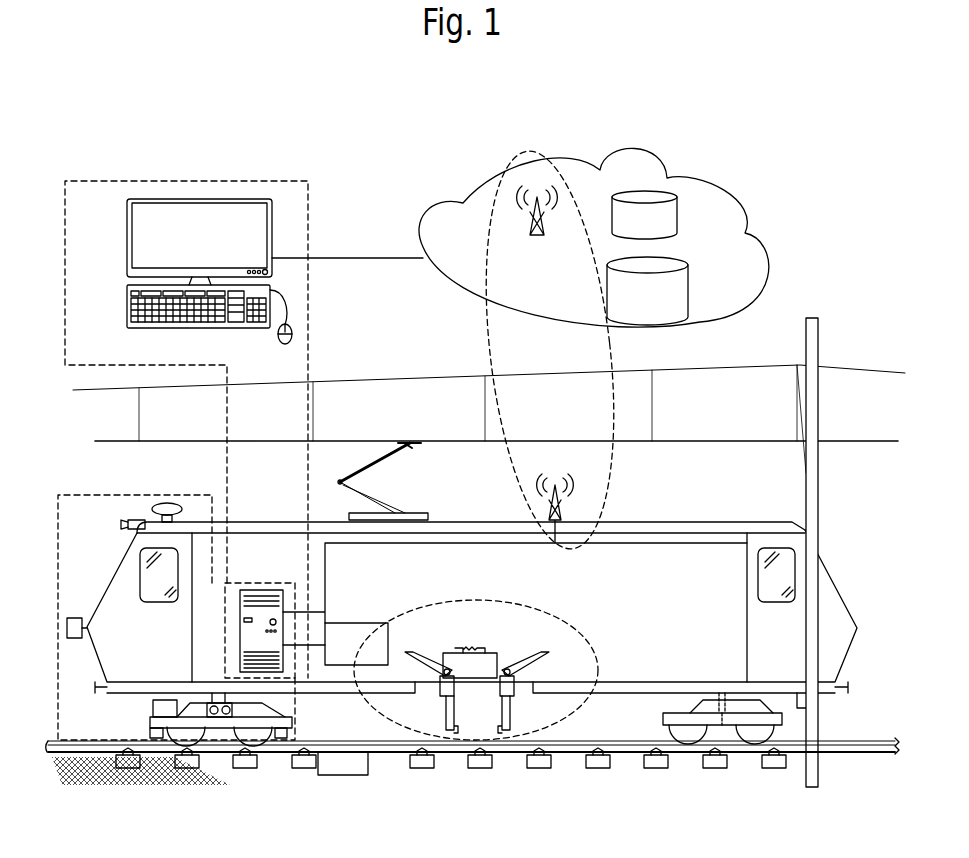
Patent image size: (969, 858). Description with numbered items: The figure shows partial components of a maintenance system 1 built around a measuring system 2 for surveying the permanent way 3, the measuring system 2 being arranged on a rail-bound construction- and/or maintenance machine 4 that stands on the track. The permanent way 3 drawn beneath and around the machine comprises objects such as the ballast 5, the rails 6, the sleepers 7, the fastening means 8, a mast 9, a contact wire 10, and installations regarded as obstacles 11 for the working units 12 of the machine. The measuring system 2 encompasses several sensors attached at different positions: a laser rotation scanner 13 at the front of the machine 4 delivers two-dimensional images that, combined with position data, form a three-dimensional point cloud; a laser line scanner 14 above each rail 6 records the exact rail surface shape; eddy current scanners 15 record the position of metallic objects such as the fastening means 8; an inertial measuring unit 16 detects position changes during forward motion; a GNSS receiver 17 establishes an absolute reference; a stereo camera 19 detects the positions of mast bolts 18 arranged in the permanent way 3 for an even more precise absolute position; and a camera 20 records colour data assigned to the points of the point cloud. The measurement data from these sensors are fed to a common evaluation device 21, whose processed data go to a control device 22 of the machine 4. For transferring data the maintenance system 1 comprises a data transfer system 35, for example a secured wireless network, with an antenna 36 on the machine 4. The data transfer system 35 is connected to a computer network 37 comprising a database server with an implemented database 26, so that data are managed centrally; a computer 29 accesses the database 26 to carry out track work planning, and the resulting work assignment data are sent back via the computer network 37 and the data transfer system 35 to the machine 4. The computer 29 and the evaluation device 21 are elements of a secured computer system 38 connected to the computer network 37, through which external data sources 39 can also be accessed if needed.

The maintenance system 1 is at (371, 100).
The measuring system 2 is at (72, 495).
The permanent way 3 is at (472, 768).
The construction- and/or maintenance machine 4 is at (665, 522).
The ballast 5 is at (130, 785).
The rail 6 is at (505, 752).
The sleeper 7 is at (600, 768).
The fastening means 8 is at (598, 745).
The mast 9 is at (818, 727).
The contact wire 10 is at (712, 441).
The obstacle 11 is at (343, 770).
The working unit 12 is at (595, 630).
The laser rotation scanner 13 is at (78, 617).
The laser line scanner 14 is at (150, 733).
The eddy current scanner 15 is at (290, 735).
The inertial measuring unit 16 is at (165, 705).
The GNSS receiver 17 is at (172, 505).
The mast bolt 18 is at (795, 700).
The stereo camera 19 is at (212, 700).
The camera 20 is at (136, 520).
The evaluation device 21 is at (268, 590).
The control device 22 is at (350, 632).
The database 26 is at (680, 292).
The computer 29 is at (125, 232).
The data transfer system 35 is at (492, 348).
The antenna 36 is at (563, 506).
The computer network 37 is at (660, 145).
The secured computer system 38 is at (268, 181).
The external data source 39 is at (660, 212).